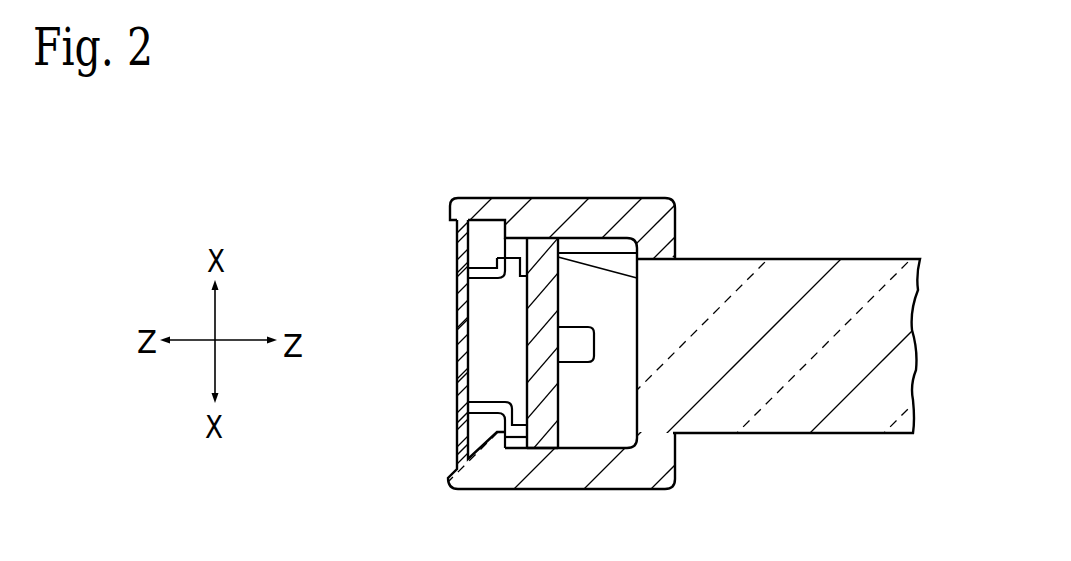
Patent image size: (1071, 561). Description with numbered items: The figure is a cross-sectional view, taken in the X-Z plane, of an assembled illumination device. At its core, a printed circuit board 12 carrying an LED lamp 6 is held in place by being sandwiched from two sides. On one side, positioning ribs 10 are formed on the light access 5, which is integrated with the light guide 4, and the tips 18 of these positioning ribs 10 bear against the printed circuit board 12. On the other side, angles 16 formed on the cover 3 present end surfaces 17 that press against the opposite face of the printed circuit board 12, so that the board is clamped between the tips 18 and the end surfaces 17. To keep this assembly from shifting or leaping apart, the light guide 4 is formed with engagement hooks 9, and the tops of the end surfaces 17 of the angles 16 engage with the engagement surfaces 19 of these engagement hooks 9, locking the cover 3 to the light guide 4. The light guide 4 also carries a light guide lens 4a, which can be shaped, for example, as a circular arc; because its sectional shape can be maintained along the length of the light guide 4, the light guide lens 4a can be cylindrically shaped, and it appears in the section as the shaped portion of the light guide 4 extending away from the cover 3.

The cover 3 is at (431, 335).
The light guide 4 is at (831, 239).
The light guide lens 4a is at (774, 280).
The light access 5 is at (607, 176).
The LED lamp 6 is at (577, 358).
The engagement hook 9 is at (485, 205).
The positioning rib 10 is at (603, 260).
The printed circuit board 12 is at (538, 447).
The angle 16 is at (478, 274).
The end surface 17 is at (537, 238).
The tip 18 is at (560, 257).
The engagement surface 19 is at (500, 257).